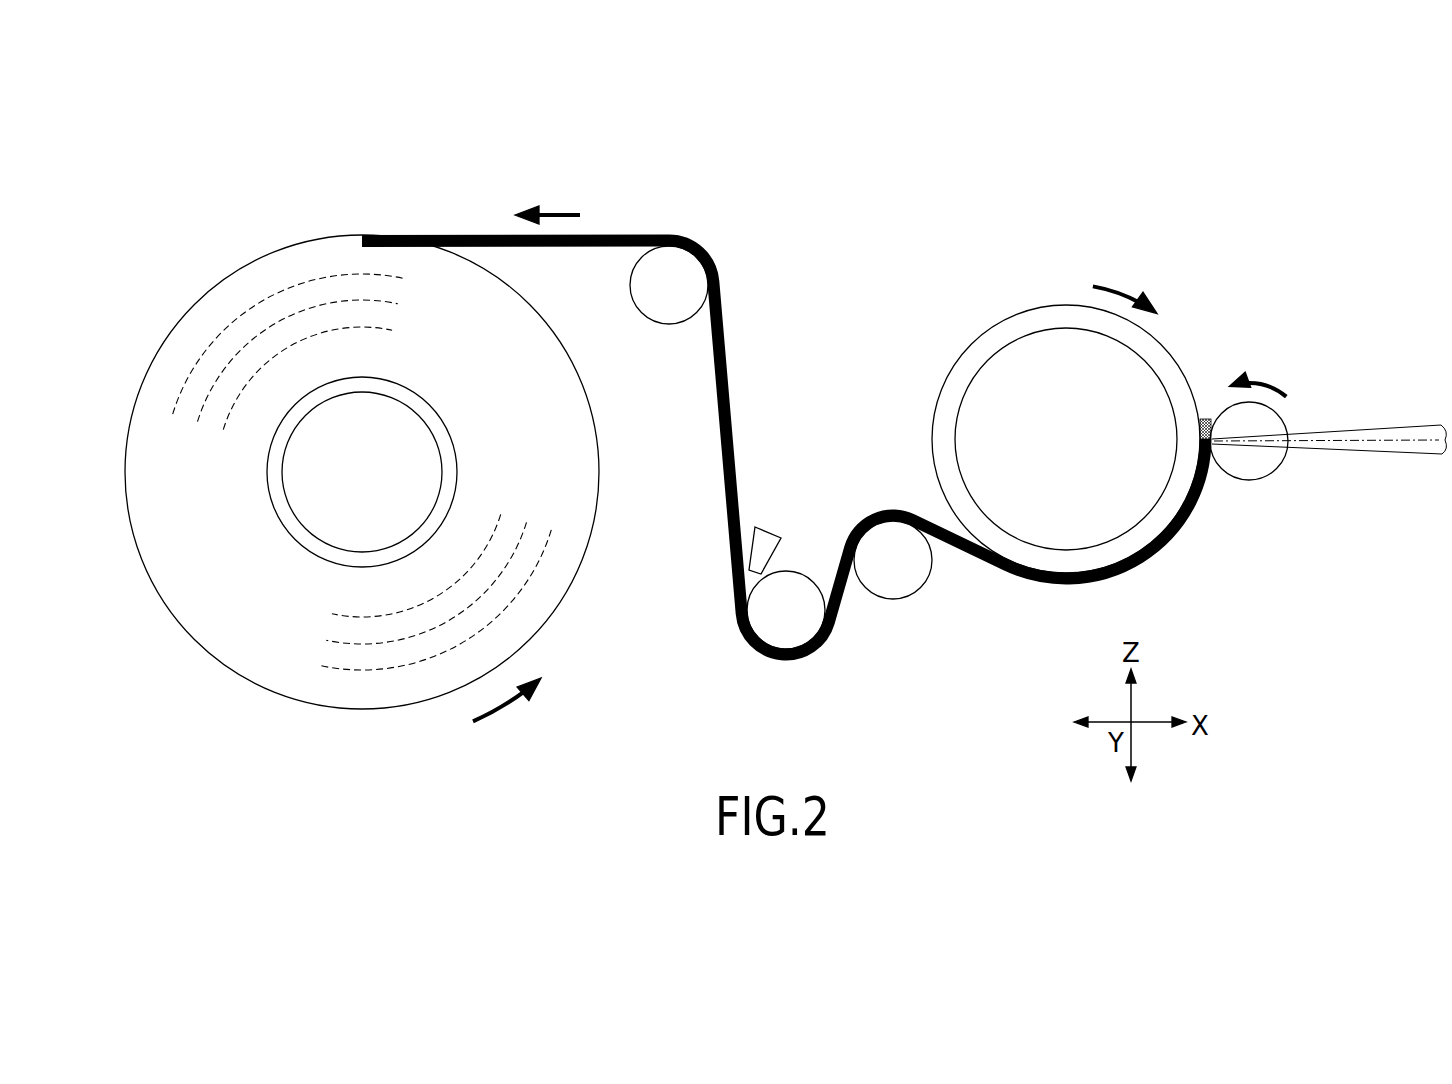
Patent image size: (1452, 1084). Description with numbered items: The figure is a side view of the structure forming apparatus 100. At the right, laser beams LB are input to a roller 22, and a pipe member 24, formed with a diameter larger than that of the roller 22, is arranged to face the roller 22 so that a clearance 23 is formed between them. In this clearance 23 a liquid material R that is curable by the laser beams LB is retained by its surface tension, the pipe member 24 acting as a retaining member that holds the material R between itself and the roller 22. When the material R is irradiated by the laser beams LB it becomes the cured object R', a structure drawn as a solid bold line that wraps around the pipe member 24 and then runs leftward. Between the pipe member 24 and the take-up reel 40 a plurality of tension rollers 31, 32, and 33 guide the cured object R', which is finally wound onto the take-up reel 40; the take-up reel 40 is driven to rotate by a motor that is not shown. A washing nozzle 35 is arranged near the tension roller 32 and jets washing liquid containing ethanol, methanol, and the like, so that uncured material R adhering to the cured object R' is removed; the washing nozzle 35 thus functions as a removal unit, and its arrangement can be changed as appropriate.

The structure forming apparatus 100 is at (838, 208).
The take-up reel 40 is at (312, 543).
The tension roller 33 is at (669, 300).
The washing nozzle 35 is at (770, 527).
The tension roller 32 is at (794, 585).
The tension roller 31 is at (897, 578).
The pipe member 24 is at (1010, 327).
The clearance 23 is at (1206, 419).
The material R is at (1156, 431).
The roller 22 is at (1248, 461).
The cured object R' is at (980, 599).
The laser beams LB is at (1389, 432).